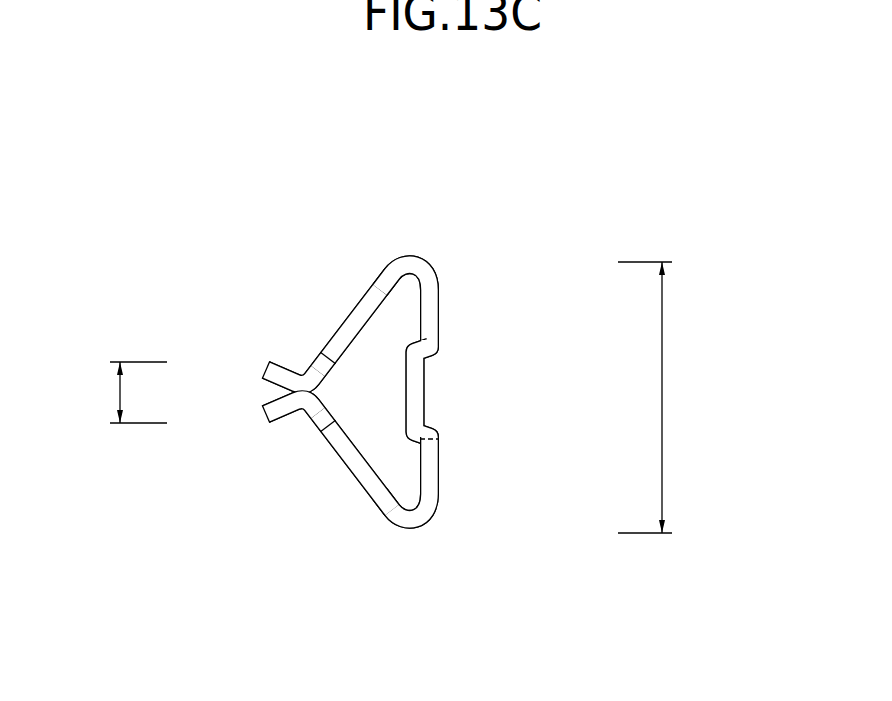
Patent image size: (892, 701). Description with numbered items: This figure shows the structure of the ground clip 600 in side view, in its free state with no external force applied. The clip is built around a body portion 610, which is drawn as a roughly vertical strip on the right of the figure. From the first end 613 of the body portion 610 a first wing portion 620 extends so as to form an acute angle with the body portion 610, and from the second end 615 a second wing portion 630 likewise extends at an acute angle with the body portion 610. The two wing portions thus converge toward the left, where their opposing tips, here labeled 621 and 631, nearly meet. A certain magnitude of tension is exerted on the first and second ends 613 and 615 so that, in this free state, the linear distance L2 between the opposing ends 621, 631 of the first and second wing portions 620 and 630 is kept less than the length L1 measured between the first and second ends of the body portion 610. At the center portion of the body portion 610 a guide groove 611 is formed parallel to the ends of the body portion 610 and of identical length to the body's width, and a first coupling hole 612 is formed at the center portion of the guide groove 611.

The ground clip 600 is at (503, 207).
The body portion 610 is at (440, 483).
The guide groove 611 is at (439, 392).
The first coupling hole 612 is at (440, 350).
The first end 613 is at (414, 256).
The second end 615 is at (433, 525).
The first wing portion 620 is at (362, 300).
The upper tip end 621 is at (295, 372).
The second wing portion 630 is at (362, 487).
The lower tip end 631 is at (295, 412).
The length L1 is at (661, 397).
The linear distance L2 is at (120, 392).